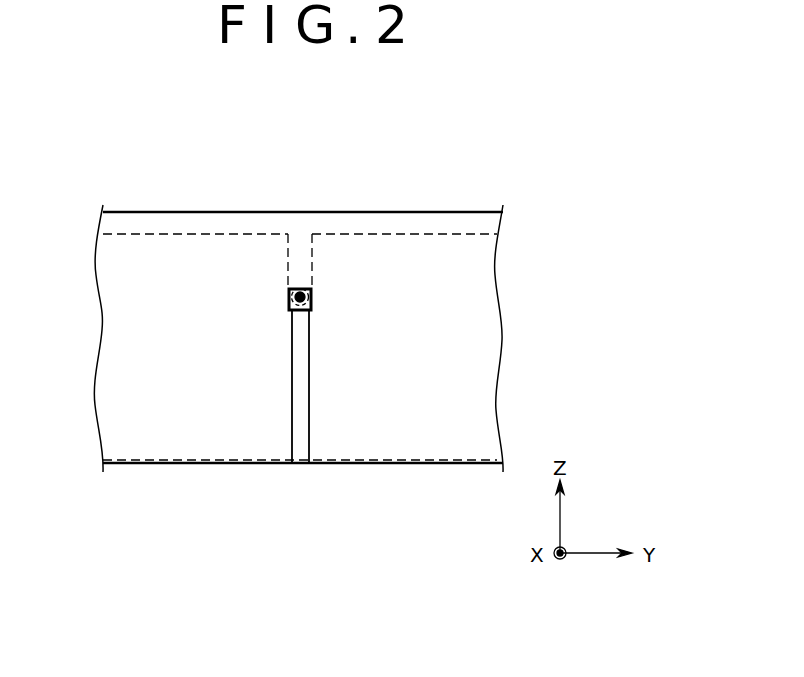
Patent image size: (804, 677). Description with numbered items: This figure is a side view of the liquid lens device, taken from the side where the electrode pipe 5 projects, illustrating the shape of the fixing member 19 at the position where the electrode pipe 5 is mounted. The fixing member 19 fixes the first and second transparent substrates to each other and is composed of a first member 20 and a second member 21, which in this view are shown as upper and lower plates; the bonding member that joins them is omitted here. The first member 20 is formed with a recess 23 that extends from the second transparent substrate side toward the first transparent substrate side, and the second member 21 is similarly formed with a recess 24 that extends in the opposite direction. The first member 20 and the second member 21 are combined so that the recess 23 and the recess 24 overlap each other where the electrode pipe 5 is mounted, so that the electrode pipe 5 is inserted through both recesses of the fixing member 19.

The fixing member 19 is at (415, 172).
The first member 20 is at (207, 232).
The second member 21 is at (425, 465).
The recess 23 is at (303, 250).
The electrode pipe 5 is at (301, 289).
The recess 24 is at (306, 452).